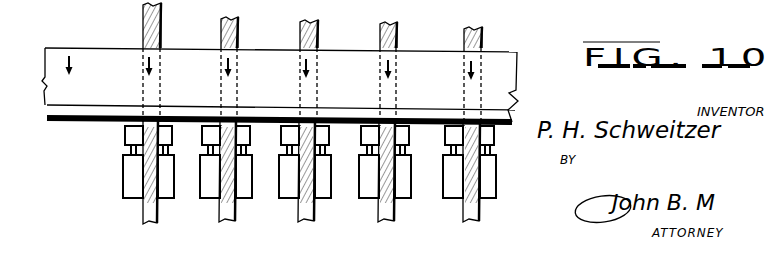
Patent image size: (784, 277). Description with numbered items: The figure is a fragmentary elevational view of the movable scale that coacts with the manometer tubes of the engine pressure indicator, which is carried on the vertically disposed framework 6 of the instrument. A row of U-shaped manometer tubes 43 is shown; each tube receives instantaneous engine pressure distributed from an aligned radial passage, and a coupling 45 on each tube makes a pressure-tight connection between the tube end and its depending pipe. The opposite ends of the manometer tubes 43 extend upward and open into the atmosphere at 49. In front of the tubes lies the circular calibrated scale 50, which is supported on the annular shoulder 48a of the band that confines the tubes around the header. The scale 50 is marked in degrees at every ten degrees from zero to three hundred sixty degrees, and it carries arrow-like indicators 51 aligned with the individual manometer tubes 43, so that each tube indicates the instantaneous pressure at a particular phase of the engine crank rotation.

The framework 6 is at (409, 0).
The manometer tubes 43 is at (152, 208).
The coupling 45 is at (133, 165).
The annular shoulder 48a is at (76, 108).
The atmospheric opening of manometer tube 49 is at (505, 34).
The circular calibrated scale 50 is at (50, 57).
The arrow-like indicators 51 is at (144, 66).